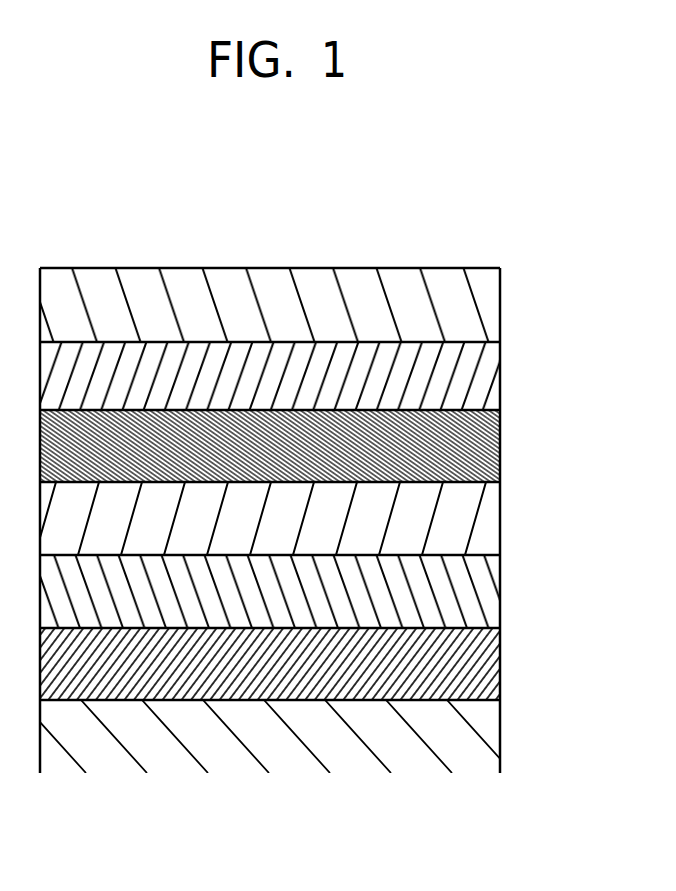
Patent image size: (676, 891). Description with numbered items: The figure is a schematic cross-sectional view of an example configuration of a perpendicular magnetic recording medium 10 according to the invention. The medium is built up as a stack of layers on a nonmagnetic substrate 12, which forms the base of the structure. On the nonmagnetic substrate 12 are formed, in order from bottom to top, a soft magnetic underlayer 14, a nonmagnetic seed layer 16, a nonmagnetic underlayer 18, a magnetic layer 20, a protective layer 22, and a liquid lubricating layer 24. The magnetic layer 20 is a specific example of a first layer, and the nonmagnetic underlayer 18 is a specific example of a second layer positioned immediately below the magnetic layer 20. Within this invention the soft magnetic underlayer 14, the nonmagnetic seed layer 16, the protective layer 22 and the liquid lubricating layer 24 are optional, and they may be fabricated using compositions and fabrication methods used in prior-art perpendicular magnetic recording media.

The perpendicular magnetic recording medium 10 is at (405, 205).
The nonmagnetic substrate 12 is at (500, 747).
The soft magnetic underlayer 14 is at (500, 667).
The nonmagnetic seed layer 16 is at (500, 597).
The nonmagnetic underlayer 18 is at (500, 520).
The magnetic layer 20 is at (500, 448).
The protective layer 22 is at (500, 380).
The liquid lubricating layer 24 is at (500, 307).